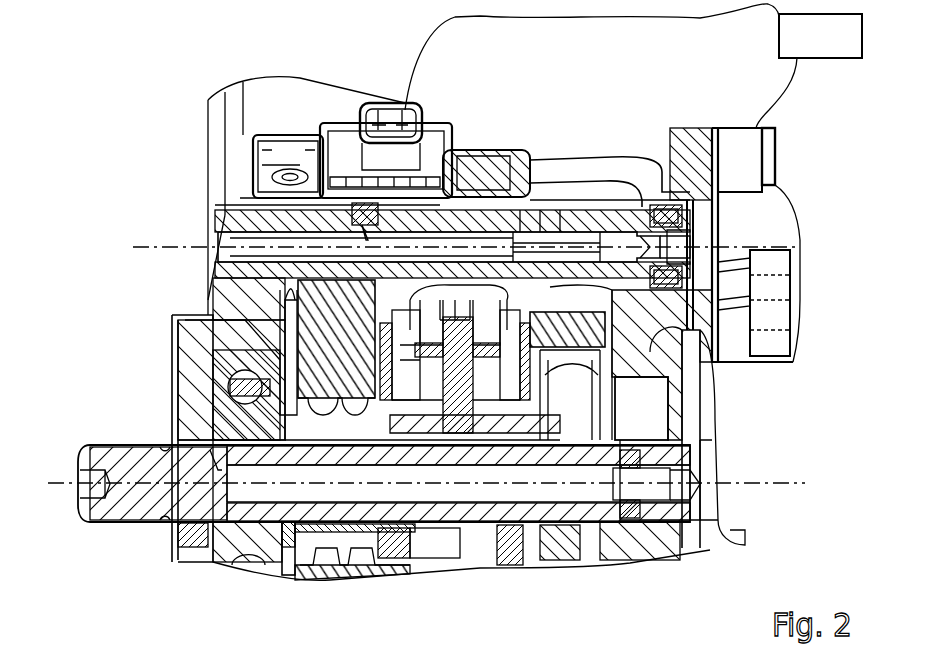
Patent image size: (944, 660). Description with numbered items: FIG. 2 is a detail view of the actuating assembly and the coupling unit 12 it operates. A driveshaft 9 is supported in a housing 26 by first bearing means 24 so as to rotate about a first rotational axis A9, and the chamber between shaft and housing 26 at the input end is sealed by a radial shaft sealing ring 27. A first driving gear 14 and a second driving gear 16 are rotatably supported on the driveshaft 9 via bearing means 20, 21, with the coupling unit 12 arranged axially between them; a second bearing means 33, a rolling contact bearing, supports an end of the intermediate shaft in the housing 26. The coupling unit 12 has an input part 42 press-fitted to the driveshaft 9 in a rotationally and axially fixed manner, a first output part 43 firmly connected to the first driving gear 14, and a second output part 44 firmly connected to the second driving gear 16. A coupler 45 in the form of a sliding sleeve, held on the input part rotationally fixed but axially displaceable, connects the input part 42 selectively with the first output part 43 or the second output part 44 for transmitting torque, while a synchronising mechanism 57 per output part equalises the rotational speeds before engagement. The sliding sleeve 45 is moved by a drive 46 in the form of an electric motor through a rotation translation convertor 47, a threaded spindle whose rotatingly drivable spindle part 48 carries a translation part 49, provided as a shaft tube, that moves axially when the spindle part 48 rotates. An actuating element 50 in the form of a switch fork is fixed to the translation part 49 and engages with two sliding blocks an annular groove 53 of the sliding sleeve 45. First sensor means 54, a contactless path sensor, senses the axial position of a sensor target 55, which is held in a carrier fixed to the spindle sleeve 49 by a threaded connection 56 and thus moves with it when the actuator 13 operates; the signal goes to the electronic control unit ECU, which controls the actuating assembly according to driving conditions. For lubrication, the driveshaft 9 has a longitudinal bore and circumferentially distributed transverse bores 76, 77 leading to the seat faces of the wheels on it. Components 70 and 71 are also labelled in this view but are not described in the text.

The driveshaft 9 is at (440, 522).
The coupling unit 12 is at (470, 232).
The actuator 13 is at (710, 116).
The first driving gear 14 is at (352, 492).
The second driving gear 16 is at (650, 405).
The bearing means 20 is at (392, 545).
The bearing means 21 is at (555, 491).
The first bearing means 24 is at (215, 385).
The housing 26 is at (166, 318).
The radial shaft sealing ring 27 is at (180, 445).
The second bearing means 33 is at (650, 386).
The input part 42 is at (470, 435).
The first output part 43 is at (405, 300).
The second output part 44 is at (558, 300).
The sliding sleeve 45 is at (508, 300).
The drive 46 is at (770, 177).
The rotation translation convertor 47 is at (630, 230).
The spindle part 48 is at (622, 200).
The translation part 49 is at (297, 200).
The switch fork 50 is at (540, 260).
The annular groove 53 is at (430, 300).
The first sensor means 54 is at (389, 137).
The sensor target 55 is at (367, 207).
The threaded connection 56 is at (362, 200).
The synchronising mechanism 57 is at (437, 300).
The flange 70 is at (700, 468).
The fastening element 71 is at (690, 432).
The transverse bores 76 is at (452, 492).
The transverse bores 77 is at (318, 545).
The first rotational axis A9 is at (58, 482).
The electronic control unit ECU is at (809, 71).